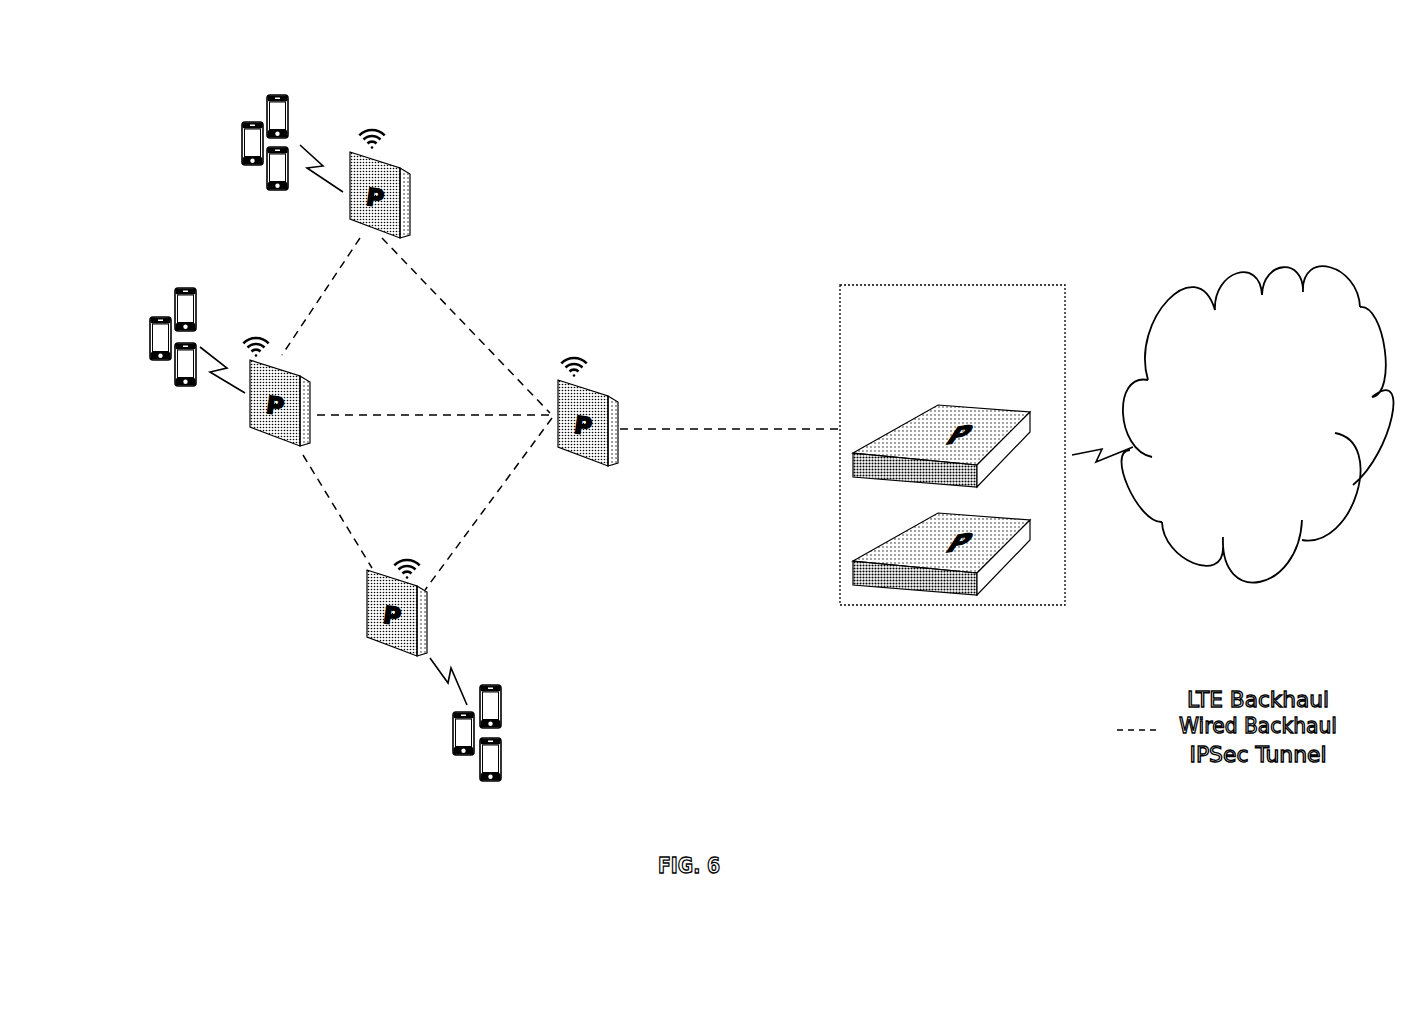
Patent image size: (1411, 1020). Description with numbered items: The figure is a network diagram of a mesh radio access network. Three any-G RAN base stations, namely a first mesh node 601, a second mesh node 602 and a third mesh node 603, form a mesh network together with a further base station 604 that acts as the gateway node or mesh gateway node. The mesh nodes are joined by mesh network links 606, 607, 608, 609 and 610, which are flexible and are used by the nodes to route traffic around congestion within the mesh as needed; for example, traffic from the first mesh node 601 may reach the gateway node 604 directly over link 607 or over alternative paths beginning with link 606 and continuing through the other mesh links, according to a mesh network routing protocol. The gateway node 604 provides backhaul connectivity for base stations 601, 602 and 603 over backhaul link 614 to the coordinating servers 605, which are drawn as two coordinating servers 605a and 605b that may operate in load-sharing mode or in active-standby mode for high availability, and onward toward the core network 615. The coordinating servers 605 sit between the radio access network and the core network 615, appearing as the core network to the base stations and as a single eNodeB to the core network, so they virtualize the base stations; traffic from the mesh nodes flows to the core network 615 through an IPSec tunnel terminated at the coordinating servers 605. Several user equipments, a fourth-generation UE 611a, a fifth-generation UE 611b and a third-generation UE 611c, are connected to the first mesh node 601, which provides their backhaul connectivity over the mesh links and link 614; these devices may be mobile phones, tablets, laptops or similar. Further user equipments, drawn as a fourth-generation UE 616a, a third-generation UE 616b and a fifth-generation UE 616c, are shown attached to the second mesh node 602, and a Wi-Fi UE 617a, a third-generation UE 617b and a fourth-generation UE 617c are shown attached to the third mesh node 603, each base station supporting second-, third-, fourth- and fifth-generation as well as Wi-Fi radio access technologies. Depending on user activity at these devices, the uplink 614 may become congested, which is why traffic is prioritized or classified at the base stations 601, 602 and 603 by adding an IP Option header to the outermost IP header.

The mesh node 1 601 is at (398, 167).
The mesh node 2 602 is at (247, 430).
The mesh node 3 603 is at (377, 657).
The base station acting as gateway node 604 is at (603, 388).
The coordinating servers 605 is at (952, 414).
The coordinating server 605a is at (1008, 403).
The coordinating server 605b is at (1008, 507).
The mesh network link 606 is at (320, 312).
The mesh network link 607 is at (480, 337).
The mesh network link 608 is at (330, 500).
The mesh network link 609 is at (500, 495).
The mesh network link 610 is at (428, 412).
The user equipment 611a is at (240, 127).
The user equipment 611b is at (265, 192).
The user equipment 611c is at (292, 117).
The backhaul link 614 is at (748, 437).
The core network 615 is at (1257, 270).
The 4G UE 616a is at (148, 342).
The 3G UE 616b is at (183, 285).
The 5G UE 616c is at (170, 372).
The Wi-Fi UE 617a is at (450, 725).
The 3G UE 617b is at (490, 785).
The 4G UE 617c is at (492, 678).